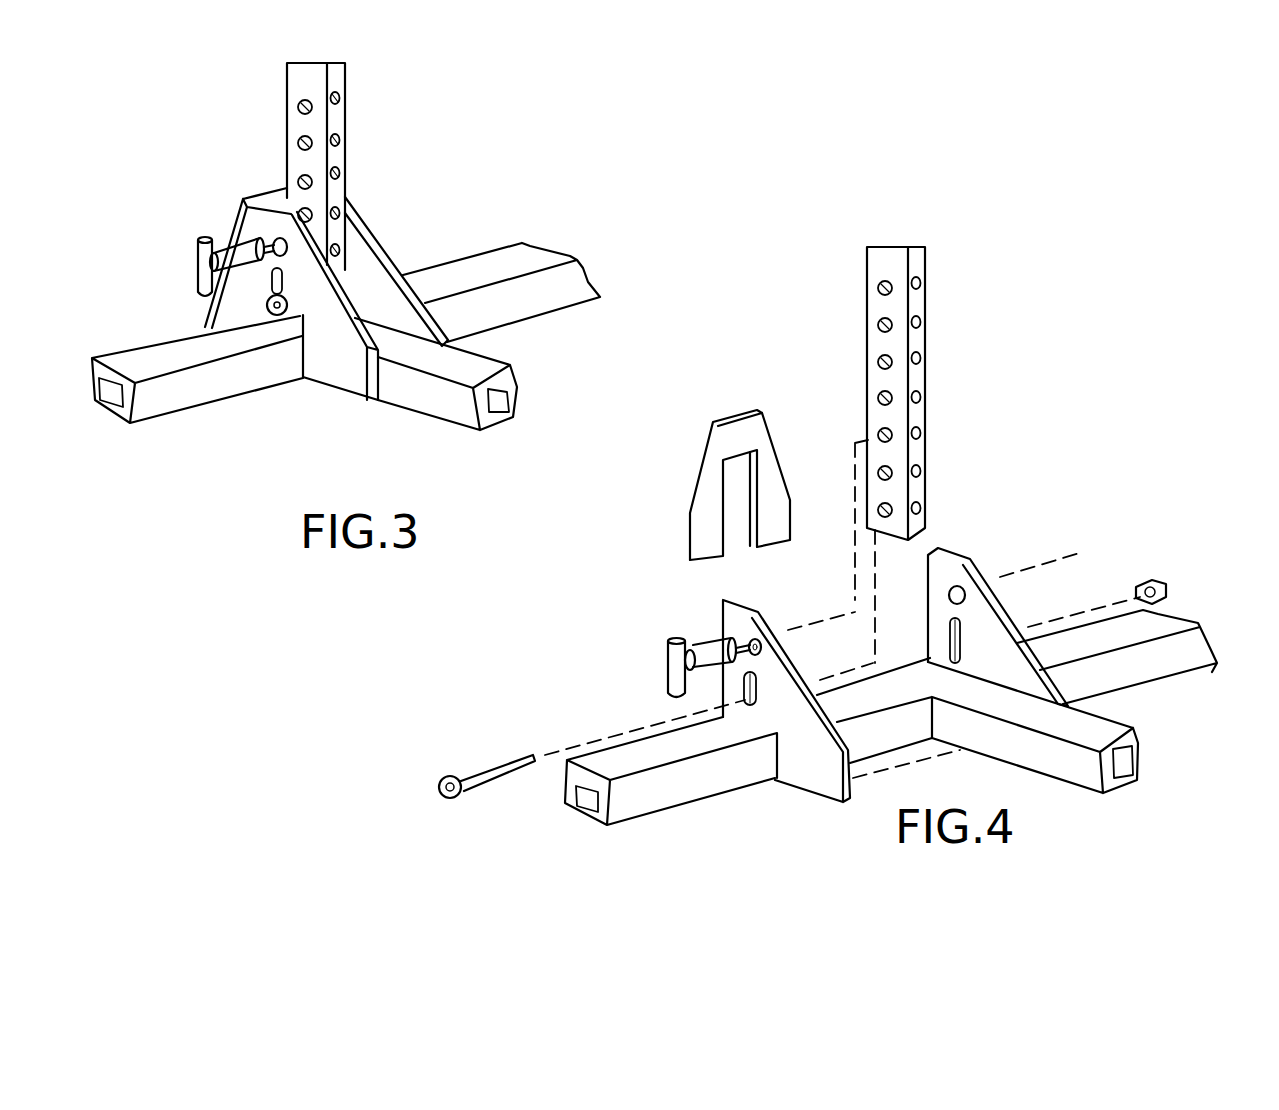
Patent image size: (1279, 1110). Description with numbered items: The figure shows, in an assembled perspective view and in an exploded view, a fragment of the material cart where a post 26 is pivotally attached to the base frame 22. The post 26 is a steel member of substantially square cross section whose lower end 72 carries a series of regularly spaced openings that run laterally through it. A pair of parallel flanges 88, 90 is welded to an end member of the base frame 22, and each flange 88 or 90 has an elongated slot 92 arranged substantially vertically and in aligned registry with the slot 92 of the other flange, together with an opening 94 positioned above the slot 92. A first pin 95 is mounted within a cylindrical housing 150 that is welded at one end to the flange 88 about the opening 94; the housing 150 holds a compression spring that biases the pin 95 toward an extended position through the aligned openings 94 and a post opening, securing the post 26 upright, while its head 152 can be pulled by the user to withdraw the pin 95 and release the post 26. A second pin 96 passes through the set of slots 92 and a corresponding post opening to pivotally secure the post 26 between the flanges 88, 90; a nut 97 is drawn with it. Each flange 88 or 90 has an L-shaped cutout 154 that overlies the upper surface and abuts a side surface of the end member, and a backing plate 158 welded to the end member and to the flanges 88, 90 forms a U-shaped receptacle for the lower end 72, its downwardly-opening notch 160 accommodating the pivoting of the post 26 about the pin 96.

In FIG. 3, the base frame 22 is at (487, 258).
In FIG. 4, the base frame 22 is at (1172, 622).
In FIG. 3, the post 26 is at (269, 164).
In FIG. 4, the post 26 is at (954, 393).
In FIG. 3, the lower end 72 is at (287, 130).
In FIG. 4, the lower end 72 is at (925, 445).
In FIG. 3, the flange 88 is at (355, 365).
In FIG. 4, the flange 88 is at (720, 731).
In FIG. 3, the flange 90 is at (382, 242).
In FIG. 4, the flange 90 is at (1060, 673).
In FIG. 4, the elongated slot 92 is at (740, 700).
In FIG. 4, the opening 94 is at (958, 590).
In FIG. 3, the first pin 95 is at (270, 190).
In FIG. 4, the first pin 95 is at (665, 585).
In FIG. 3, the second pin 96 is at (268, 305).
In FIG. 4, the second pin 96 is at (502, 767).
In FIG. 4, the nut 97 is at (1150, 580).
In FIG. 3, the cylindrical housing 150 is at (265, 240).
In FIG. 4, the cylindrical housing 150 is at (718, 640).
In FIG. 3, the head 152 is at (200, 262).
In FIG. 4, the head 152 is at (668, 650).
In FIG. 3, the L-shaped cutout 154 is at (283, 345).
In FIG. 4, the L-shaped cutout 154 is at (777, 762).
In FIG. 4, the backing plate 158 is at (764, 438).
In FIG. 4, the downwardly-opening notch 160 is at (758, 514).